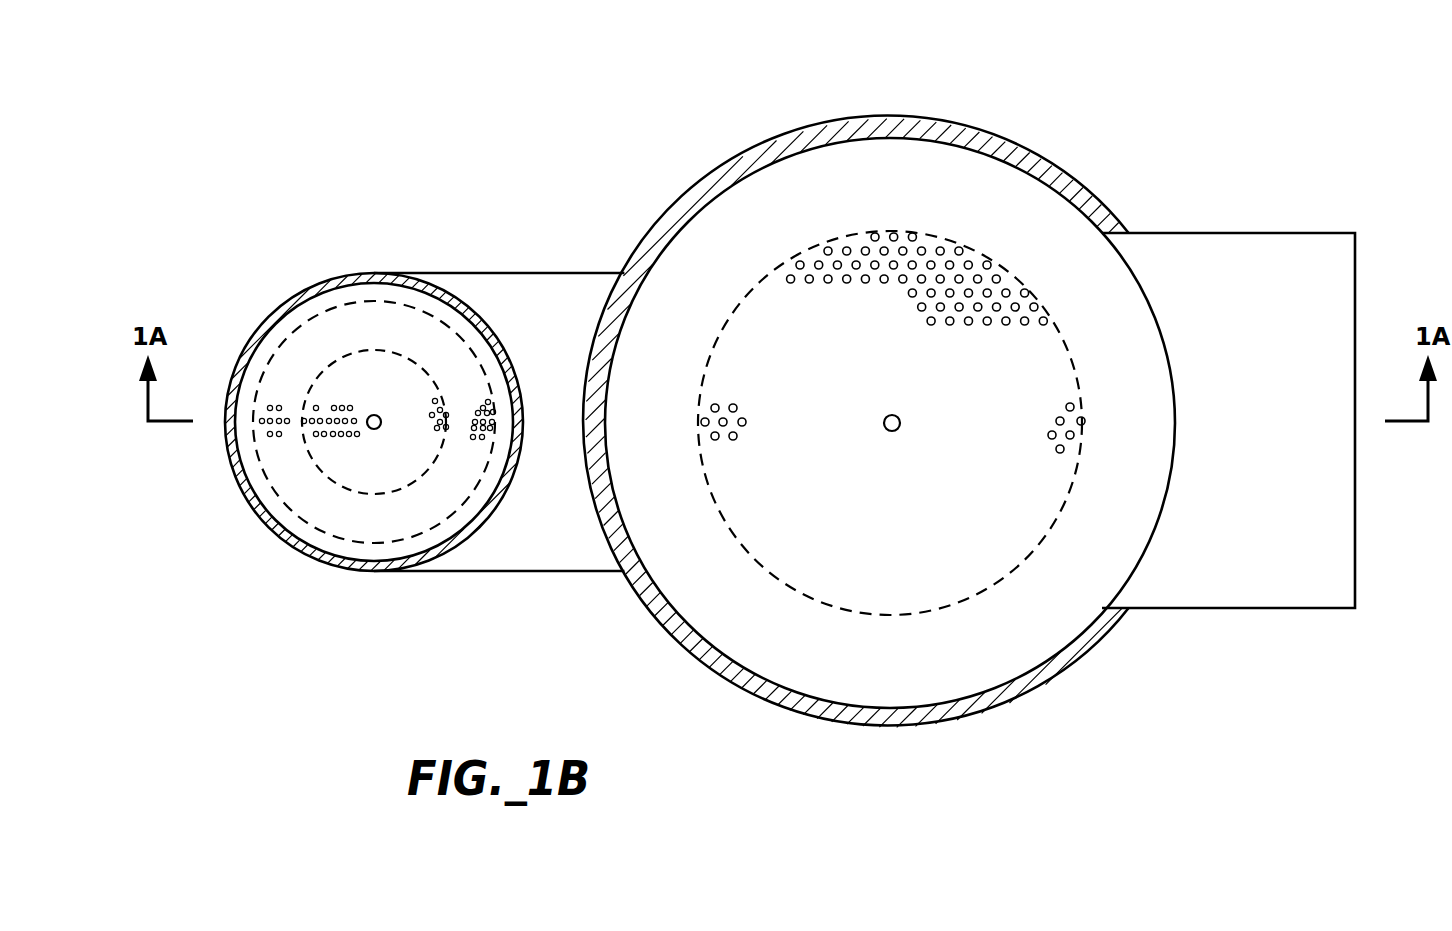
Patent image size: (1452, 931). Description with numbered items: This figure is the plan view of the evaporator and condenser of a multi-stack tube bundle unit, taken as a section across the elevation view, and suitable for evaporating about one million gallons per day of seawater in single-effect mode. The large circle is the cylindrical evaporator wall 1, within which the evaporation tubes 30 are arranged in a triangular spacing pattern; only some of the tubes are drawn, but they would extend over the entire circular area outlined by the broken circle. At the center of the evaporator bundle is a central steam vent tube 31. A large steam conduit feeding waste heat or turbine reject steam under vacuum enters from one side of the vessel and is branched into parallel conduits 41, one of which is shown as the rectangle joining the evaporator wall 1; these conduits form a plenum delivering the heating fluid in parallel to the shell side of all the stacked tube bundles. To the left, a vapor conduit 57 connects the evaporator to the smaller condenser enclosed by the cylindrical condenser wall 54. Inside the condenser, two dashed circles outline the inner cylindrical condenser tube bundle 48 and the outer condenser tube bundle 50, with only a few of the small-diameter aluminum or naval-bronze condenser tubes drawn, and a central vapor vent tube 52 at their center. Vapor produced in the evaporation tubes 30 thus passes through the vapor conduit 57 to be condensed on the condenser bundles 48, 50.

The cylindrical evaporator wall 1 is at (688, 207).
The evaporation tubes 30 is at (910, 295).
The central steam vent tube 31 is at (901, 421).
The parallel conduits 41 is at (1280, 436).
The inner cylindrical condenser tube bundle 48 is at (391, 386).
The outer condenser tube bundle 50 is at (453, 362).
The central vapor vent tube 52 is at (382, 428).
The condenser wall 54 is at (284, 304).
The vapor conduit 57 is at (570, 334).